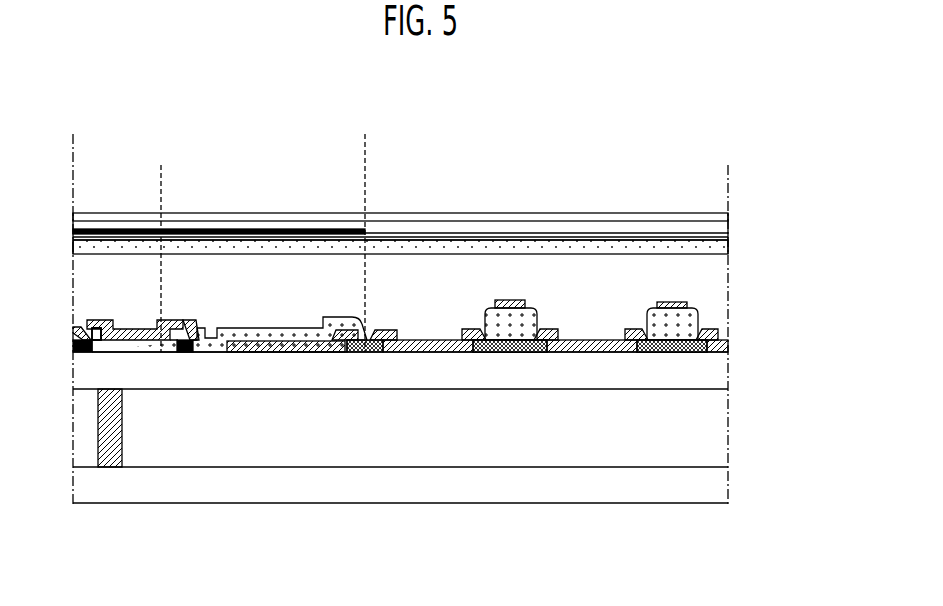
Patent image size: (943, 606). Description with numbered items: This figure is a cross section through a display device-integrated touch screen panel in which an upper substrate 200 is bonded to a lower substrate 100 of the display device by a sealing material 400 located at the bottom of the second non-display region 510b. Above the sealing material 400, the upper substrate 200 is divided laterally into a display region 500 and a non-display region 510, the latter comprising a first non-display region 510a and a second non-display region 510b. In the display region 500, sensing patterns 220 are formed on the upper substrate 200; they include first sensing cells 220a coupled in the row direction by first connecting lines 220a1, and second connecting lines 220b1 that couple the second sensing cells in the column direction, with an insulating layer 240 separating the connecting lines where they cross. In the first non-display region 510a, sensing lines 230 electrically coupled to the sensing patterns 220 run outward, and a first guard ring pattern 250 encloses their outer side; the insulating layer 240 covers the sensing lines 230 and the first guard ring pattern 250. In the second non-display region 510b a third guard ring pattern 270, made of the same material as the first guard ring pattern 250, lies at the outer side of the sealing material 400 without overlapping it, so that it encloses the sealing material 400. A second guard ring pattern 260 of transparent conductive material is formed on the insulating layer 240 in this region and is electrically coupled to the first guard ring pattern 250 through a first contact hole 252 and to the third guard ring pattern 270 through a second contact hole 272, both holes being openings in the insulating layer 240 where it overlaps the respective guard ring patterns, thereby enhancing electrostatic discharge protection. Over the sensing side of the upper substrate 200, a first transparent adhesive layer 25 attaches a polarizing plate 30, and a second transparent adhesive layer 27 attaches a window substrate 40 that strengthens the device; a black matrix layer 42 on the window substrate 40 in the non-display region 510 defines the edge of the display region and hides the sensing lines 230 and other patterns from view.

The lower substrate 100 is at (728, 483).
The upper substrate 200 is at (736, 373).
The sensing patterns 220 is at (586, 322).
The first sensing cells 220a is at (720, 334).
The first connecting lines 220a1 is at (712, 345).
The second connecting lines 220b1 is at (690, 300).
The sensing lines 230 is at (290, 352).
The insulating layer 240 is at (658, 310).
The first guard ring pattern 250 is at (183, 352).
The first contact hole 252 is at (192, 316).
The second guard ring pattern 260 is at (76, 328).
The third guard ring pattern 270 is at (76, 347).
The second contact hole 272 is at (90, 316).
The sealing material 400 is at (98, 428).
The first transparent adhesive layer 25 is at (88, 284).
The second transparent adhesive layer 27 is at (77, 239).
The polarizing plate 30 is at (77, 253).
The window substrate 40 is at (76, 220).
The black matrix layer 42 is at (76, 232).
The display region 500 is at (727, 174).
The non-display region 510 is at (364, 144).
The first non-display region 510a is at (364, 174).
The second non-display region 510b is at (160, 174).